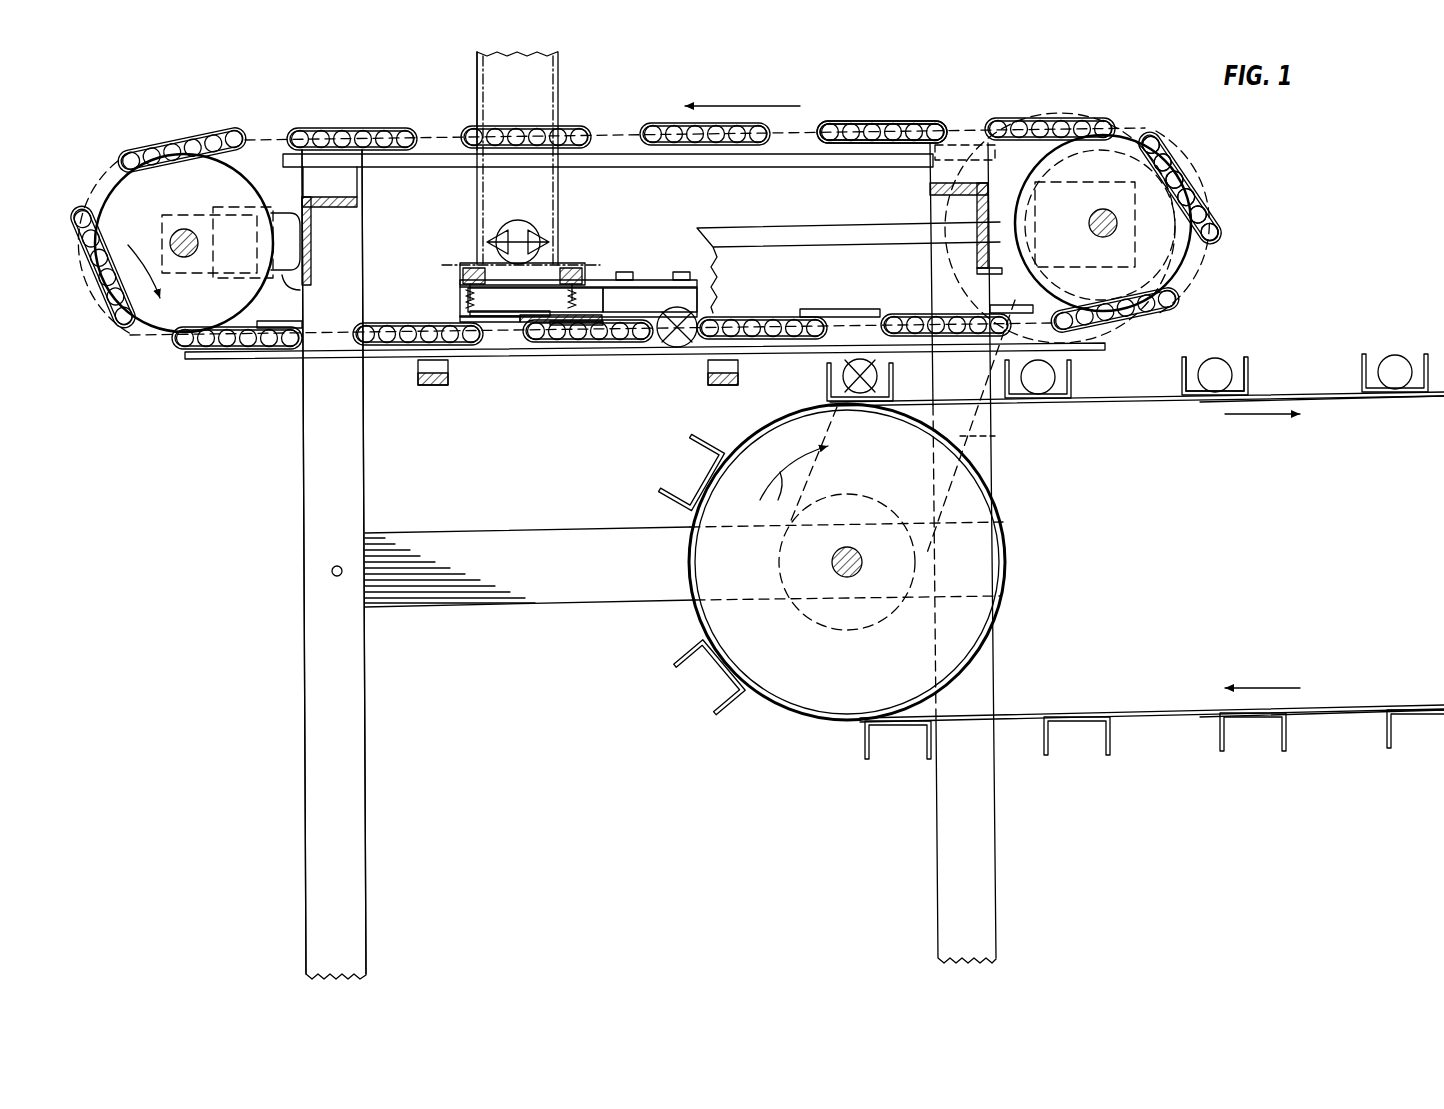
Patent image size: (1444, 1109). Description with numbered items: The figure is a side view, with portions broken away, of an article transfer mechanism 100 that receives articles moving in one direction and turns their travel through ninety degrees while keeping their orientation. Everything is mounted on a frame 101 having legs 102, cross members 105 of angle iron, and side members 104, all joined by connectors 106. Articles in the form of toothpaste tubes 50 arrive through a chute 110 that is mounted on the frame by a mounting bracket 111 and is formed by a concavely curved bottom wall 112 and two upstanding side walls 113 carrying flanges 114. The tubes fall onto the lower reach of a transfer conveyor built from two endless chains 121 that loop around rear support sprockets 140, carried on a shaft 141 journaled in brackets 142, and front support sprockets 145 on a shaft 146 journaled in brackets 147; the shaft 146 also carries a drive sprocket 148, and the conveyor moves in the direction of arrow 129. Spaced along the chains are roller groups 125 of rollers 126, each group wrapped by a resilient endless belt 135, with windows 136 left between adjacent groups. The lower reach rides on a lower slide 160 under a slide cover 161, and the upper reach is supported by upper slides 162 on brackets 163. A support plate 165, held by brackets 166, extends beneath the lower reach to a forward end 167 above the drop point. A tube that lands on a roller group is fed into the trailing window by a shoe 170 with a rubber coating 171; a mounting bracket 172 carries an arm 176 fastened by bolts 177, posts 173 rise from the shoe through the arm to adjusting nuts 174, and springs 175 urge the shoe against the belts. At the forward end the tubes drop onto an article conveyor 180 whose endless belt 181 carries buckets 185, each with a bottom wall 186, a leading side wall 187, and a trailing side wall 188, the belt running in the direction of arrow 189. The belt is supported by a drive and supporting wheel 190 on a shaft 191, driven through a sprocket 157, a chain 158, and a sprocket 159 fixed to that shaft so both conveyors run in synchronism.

The toothpaste tube 50 is at (535, 222).
The article transfer mechanism 100 is at (148, 582).
The frame 101 is at (328, 657).
The legs 102 is at (365, 490).
The side members 104 is at (430, 607).
The cross members 105 is at (352, 203).
The connectors 106 is at (332, 570).
The chute 110 is at (566, 78).
The mounting bracket 111 is at (592, 262).
The bottom wall 112 is at (490, 78).
The side walls 113 is at (478, 100).
The flanges 114 is at (455, 262).
The endless belts or chains 121 is at (275, 138).
The roller groups 125 is at (165, 133).
The rollers 126 is at (228, 138).
The arrow 129 is at (453, 181).
The resilient endless belt 135 is at (218, 126).
The windows 136 is at (625, 132).
The rear support sprockets 140 is at (162, 312).
The shaft 141 is at (184, 236).
The brackets 142 is at (305, 283).
The front support sprockets 145 is at (1165, 141).
The shaft 146 is at (1103, 240).
The brackets 147 is at (990, 276).
The drive sprocket 148 is at (1128, 130).
The sprocket 157 is at (962, 226).
The chain 158 is at (999, 437).
The sprocket 159 is at (858, 490).
The lower slide 160 is at (258, 360).
The slide cover 161 is at (272, 322).
The upper slides 162 is at (445, 165).
The brackets 163 is at (322, 182).
The support plate 165 is at (495, 340).
The brackets 166 is at (432, 386).
The forward end 167 is at (835, 368).
The shoe 170 is at (505, 330).
The rubber coating 171 is at (565, 335).
The mounting bracket 172 is at (640, 284).
The posts 173 is at (463, 274).
The adjusting nuts 174 is at (567, 262).
The springs 175 is at (466, 300).
The arm 176 is at (606, 282).
The bolts 177 is at (633, 272).
The article conveyor 180 is at (1345, 302).
The endless belt 181 is at (1148, 404).
The buckets 185 is at (1400, 325).
The bottom wall 186 is at (1205, 399).
The leading side wall 187 is at (1250, 368).
The trailing side wall 188 is at (1185, 372).
The direction of travel 189 is at (1016, 551).
The drive and supporting wheel 190 is at (1005, 556).
The shaft 191 is at (858, 560).